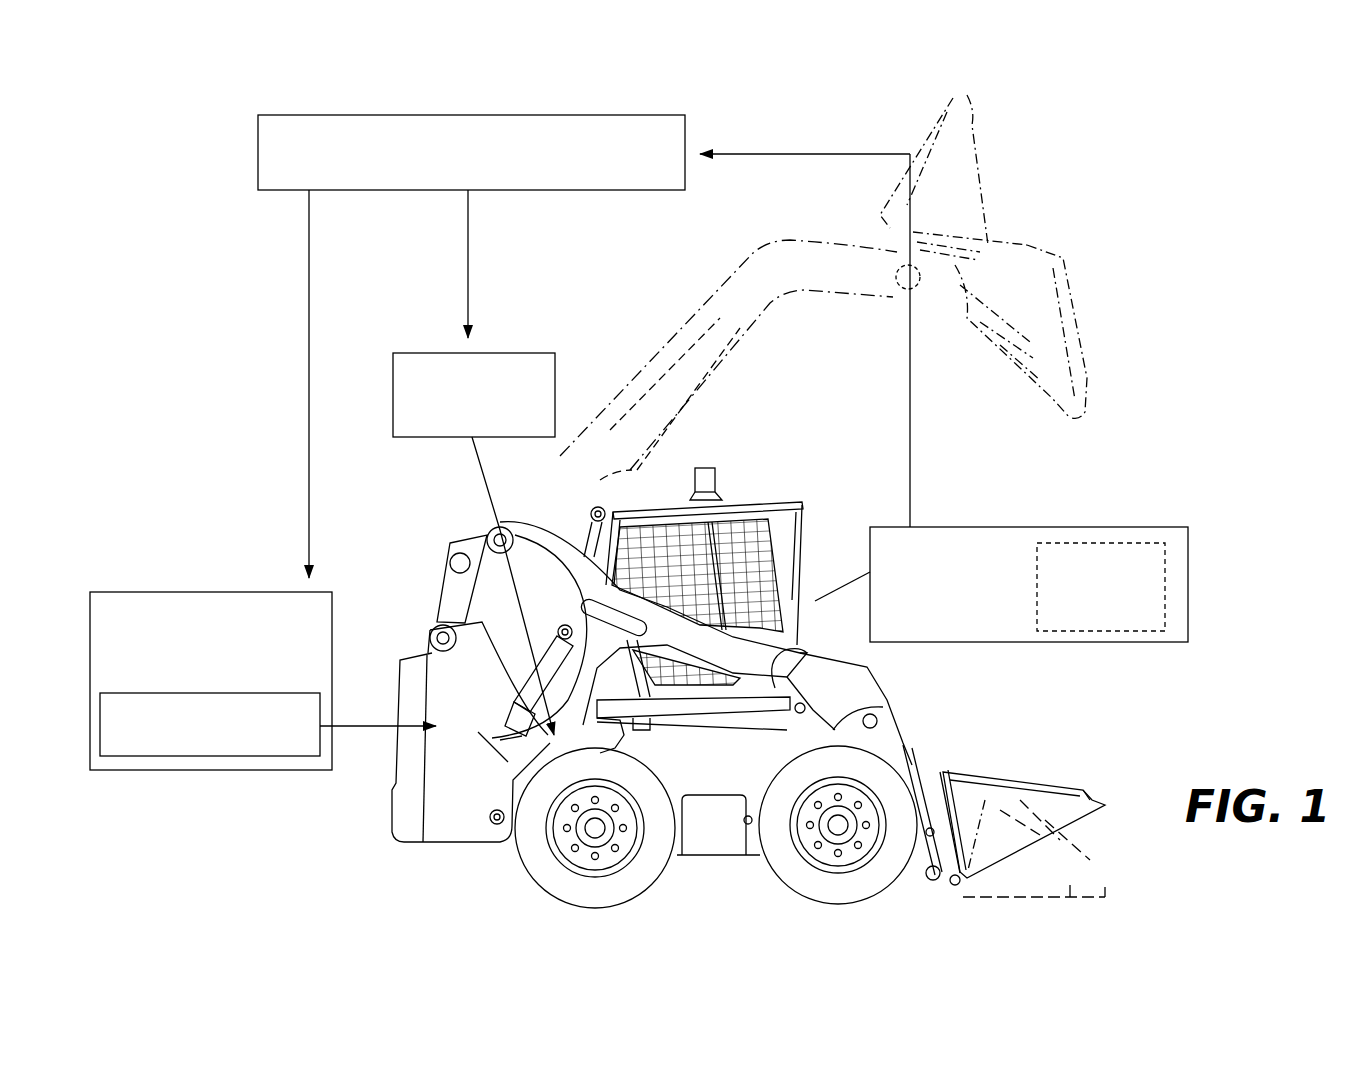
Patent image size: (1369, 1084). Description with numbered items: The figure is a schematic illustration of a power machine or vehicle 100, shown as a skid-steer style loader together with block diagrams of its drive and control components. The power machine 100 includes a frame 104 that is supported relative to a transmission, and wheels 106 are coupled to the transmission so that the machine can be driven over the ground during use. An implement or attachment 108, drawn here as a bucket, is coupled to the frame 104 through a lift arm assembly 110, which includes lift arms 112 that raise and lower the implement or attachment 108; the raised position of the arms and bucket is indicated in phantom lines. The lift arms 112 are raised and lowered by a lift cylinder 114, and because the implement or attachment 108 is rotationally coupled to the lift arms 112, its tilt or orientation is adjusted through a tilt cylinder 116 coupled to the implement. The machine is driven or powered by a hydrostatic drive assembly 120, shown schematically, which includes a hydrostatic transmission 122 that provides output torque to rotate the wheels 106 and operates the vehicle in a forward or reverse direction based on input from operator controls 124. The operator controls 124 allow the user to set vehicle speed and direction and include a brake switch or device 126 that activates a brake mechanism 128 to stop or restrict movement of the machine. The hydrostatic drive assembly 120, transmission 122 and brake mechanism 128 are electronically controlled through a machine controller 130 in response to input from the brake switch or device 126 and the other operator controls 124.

The power machine or vehicle 100 is at (1131, 312).
The frame 104 is at (897, 710).
The wheels 106 is at (527, 880).
The implement or attachment 108 is at (1012, 292).
The lift arm assembly 110 is at (762, 262).
The lift arms 112 is at (793, 291).
The lift cylinder 114 is at (537, 712).
The tilt cylinder 116 is at (925, 775).
The hydrostatic drive assembly 120 is at (182, 592).
The hydrostatic transmission 122 is at (310, 693).
The operator controls 124 is at (978, 523).
The brake switch or device 126 is at (1092, 543).
The brake mechanism 128 is at (505, 353).
The machine controller 130 is at (575, 191).